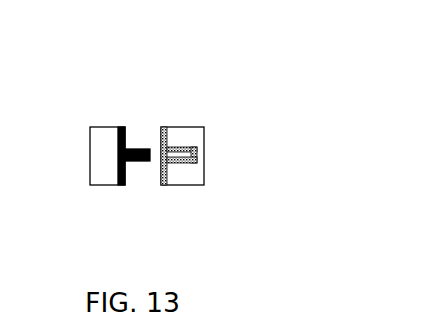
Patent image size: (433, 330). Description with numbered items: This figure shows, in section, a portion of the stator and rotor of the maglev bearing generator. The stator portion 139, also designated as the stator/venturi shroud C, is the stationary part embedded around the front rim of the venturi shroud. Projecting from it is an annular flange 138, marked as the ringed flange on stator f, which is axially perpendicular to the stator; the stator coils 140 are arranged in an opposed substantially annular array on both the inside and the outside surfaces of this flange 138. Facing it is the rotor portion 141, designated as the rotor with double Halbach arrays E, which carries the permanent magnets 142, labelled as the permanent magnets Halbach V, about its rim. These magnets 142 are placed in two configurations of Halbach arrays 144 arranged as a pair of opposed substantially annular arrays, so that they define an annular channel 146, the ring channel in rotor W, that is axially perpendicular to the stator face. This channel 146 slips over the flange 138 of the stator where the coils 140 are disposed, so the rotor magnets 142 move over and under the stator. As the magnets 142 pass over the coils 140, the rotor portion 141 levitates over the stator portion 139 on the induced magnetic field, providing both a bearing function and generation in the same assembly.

The annular flange 138 is at (146, 147).
The stator portion 139 is at (94, 200).
The stator coils 140 is at (119, 137).
The rotor portion 141 is at (217, 178).
The permanent magnets 142 is at (188, 150).
The Halbach arrays 144 is at (184, 171).
The annular channel 146 is at (178, 160).
The stator/venturi shroud C is at (150, 155).
The rotor with double Halbach arrays E is at (193, 155).
The permanent magnets Halbach V is at (168, 147).
The ring channel in rotor W is at (155, 153).
The ringed flange on stator f is at (142, 148).